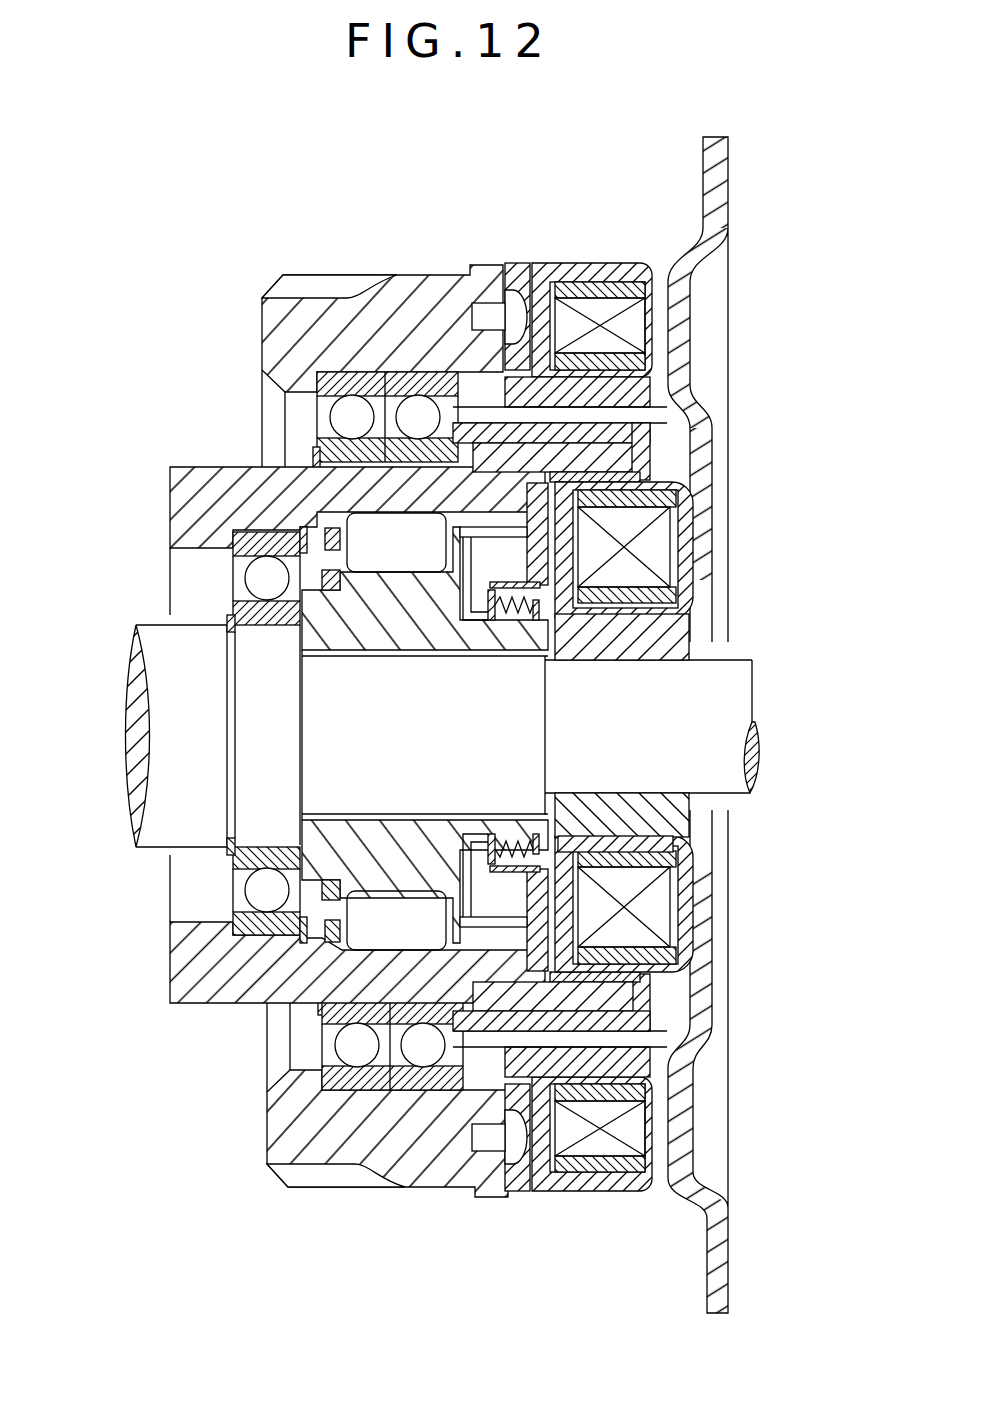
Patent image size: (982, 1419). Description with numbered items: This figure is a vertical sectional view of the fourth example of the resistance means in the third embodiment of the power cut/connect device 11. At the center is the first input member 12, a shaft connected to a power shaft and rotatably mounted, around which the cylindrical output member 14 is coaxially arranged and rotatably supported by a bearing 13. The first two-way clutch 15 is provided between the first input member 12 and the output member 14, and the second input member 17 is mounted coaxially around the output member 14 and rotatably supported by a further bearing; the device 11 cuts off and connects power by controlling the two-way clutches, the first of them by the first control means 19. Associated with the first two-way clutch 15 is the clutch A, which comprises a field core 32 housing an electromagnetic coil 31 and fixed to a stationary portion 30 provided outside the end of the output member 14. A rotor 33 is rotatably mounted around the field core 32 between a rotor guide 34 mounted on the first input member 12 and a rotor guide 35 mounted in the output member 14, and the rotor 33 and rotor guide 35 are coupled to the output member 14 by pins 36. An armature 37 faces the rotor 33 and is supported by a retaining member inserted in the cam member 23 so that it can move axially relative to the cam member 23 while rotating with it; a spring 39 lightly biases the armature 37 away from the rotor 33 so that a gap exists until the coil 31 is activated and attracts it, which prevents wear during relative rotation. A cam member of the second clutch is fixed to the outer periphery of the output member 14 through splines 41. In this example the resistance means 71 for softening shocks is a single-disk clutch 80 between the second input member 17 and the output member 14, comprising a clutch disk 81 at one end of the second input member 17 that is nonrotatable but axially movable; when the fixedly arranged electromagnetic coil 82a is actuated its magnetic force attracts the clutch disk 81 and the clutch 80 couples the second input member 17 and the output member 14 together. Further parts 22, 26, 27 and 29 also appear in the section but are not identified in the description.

The power cut/connect device 11 is at (316, 270).
The first input member 12 is at (160, 748).
The bearing 13 is at (265, 580).
The output member 14 is at (183, 490).
The first two-way clutch 15 is at (266, 1007).
The second input member 17 is at (290, 333).
The first control means 19 is at (700, 563).
The hub sleeve 22 is at (327, 800).
The cam member 23 is at (384, 835).
The seal 26 is at (346, 594).
The rotor magnet 27 is at (424, 910).
The rotor magnet 29 is at (430, 585).
The stationary portion 30 is at (716, 170).
The electromagnetic coil 31 is at (660, 533).
The field core 32 is at (700, 487).
The rotor 33 is at (660, 827).
The rotor guide 34 is at (683, 800).
The rotor guide 35 is at (613, 1027).
The pins 36 is at (655, 983).
The armature 37 is at (553, 467).
The spring 39 is at (518, 615).
The splines 41 is at (355, 1057).
The resistance means 71 is at (626, 262).
The single-disk clutch 80 is at (547, 268).
The clutch disk 81 is at (515, 268).
The electromagnetic coil 82a is at (650, 317).
The clutch A is at (702, 606).